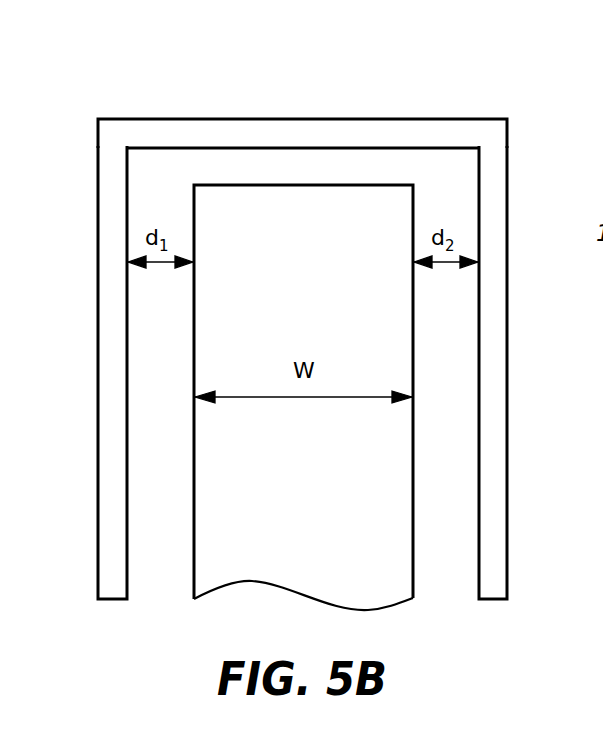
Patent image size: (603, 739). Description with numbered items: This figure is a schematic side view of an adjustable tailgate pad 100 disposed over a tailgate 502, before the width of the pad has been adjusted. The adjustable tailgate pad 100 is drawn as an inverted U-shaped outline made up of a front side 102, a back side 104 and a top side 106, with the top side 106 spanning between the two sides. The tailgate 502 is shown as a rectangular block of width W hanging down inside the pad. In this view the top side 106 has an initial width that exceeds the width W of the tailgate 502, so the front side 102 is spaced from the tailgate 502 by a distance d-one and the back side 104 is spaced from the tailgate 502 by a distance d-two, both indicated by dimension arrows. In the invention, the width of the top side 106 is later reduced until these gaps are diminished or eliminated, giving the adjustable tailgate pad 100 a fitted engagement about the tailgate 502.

The adjustable tailgate pad 100 is at (413, 87).
The front side 102 is at (97, 212).
The back side 104 is at (509, 322).
The top side 106 is at (300, 118).
The tailgate 502 is at (377, 597).